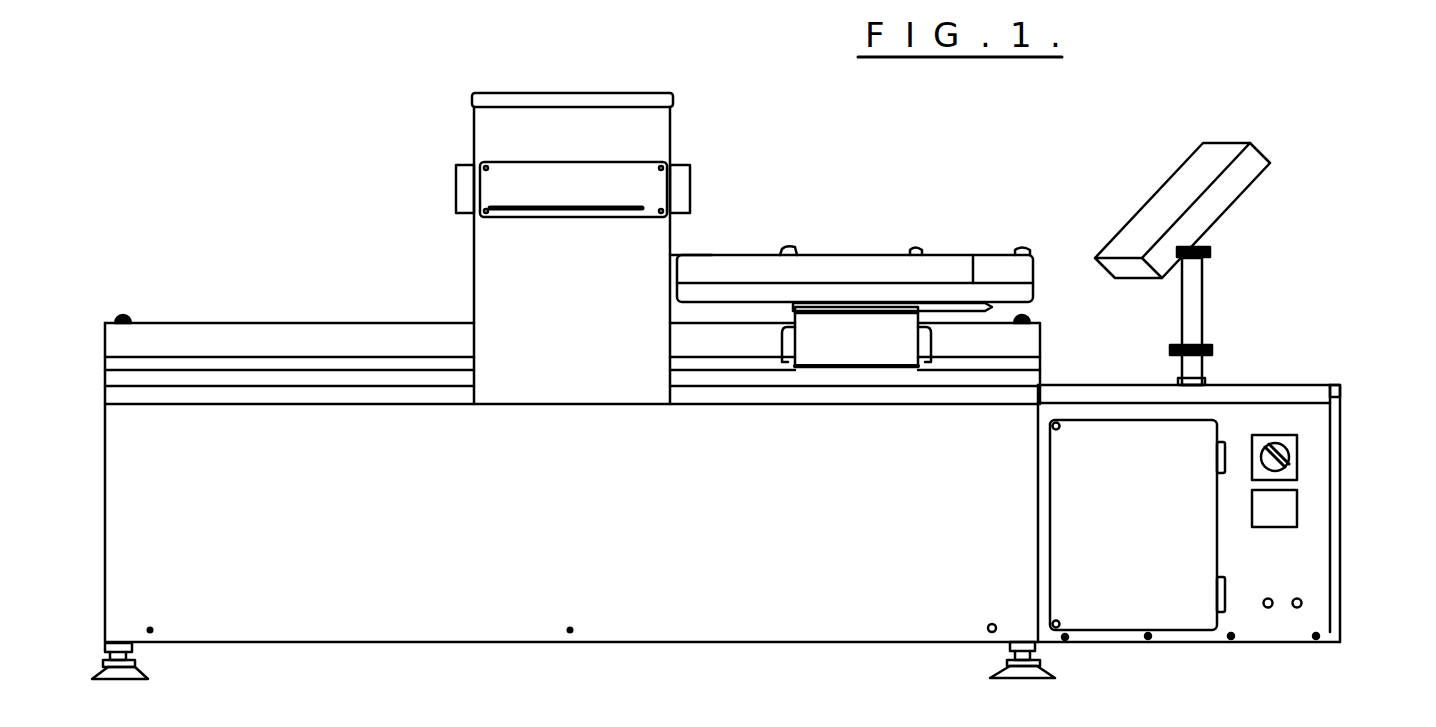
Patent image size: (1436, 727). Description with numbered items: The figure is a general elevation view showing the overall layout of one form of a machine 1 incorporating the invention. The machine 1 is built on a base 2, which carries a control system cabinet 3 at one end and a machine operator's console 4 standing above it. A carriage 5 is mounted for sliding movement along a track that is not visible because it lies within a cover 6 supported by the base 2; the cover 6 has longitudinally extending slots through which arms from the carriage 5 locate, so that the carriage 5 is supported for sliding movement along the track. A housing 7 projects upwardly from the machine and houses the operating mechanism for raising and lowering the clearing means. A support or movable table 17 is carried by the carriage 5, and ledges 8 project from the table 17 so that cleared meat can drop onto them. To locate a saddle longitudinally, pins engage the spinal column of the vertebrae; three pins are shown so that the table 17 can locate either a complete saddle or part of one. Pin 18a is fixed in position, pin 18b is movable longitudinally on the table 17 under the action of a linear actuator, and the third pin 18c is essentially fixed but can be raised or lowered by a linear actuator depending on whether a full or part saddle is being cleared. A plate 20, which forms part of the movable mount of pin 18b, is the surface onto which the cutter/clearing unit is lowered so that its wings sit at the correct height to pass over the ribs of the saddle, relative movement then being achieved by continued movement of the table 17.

The machine 1 is at (373, 117).
The base 2 is at (716, 501).
The control system cabinet 3 is at (1313, 523).
The machine operator's console 4 is at (1200, 185).
The carriage 5 is at (863, 350).
The cover 6 is at (332, 338).
The housing 7 is at (593, 110).
The ledges 8 is at (1023, 294).
The movable table 17 is at (847, 265).
The pin 18a is at (1022, 248).
The pin 18b is at (782, 248).
The pin 18c is at (913, 248).
The plate 20 is at (712, 253).